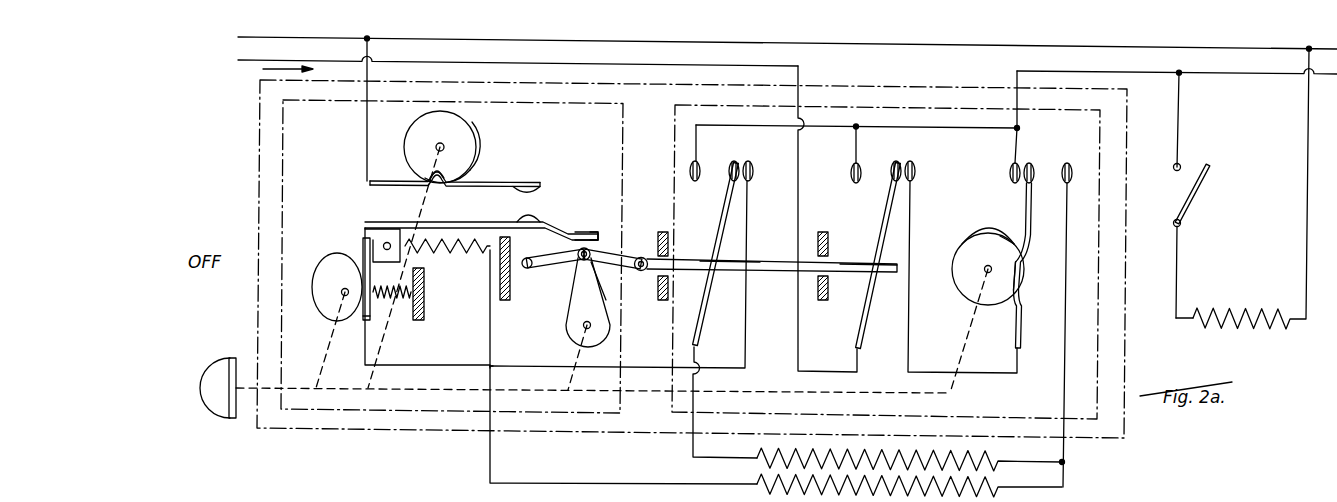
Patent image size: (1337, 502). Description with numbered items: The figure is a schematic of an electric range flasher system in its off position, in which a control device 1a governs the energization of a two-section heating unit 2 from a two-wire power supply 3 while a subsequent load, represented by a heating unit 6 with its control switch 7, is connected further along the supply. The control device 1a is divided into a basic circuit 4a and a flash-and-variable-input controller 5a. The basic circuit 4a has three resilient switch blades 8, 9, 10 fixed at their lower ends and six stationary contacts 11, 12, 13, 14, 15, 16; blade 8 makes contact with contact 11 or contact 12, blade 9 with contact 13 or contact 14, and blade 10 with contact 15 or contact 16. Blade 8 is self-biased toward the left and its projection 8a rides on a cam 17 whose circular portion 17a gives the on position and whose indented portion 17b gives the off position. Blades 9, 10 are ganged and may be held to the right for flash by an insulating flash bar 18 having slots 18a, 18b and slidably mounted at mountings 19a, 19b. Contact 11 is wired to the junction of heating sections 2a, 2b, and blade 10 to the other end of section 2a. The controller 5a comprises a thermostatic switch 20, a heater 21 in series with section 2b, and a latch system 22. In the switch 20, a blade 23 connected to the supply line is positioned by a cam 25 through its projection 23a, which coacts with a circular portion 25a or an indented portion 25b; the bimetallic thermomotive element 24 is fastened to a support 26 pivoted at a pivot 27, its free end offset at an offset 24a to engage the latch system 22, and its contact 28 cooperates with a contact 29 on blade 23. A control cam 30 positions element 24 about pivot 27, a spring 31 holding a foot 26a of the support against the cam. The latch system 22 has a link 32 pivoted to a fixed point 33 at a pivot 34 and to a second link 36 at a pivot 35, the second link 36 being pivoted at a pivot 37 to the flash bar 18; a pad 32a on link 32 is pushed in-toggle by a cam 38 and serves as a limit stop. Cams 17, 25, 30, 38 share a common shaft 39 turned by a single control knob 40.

The control device 1a is at (618, 432).
The heating unit 2 is at (926, 470).
The heating unit section 2a is at (1000, 458).
The heating unit section 2b is at (1000, 485).
The electrical power supply 3 is at (228, 14).
The basic circuit 4a is at (1012, 419).
The flash-and-variable-input controller 5a is at (445, 412).
The heating unit 6 is at (1233, 313).
The control switch 7 is at (1200, 197).
The switch blade 8 is at (1032, 210).
The projection 8a is at (1019, 264).
The switch blade 9 is at (878, 262).
The switch blade 10 is at (713, 255).
The stationary contact 11 is at (1070, 163).
The stationary contact 12 is at (1012, 165).
The stationary contact 13 is at (910, 163).
The stationary contact 14 is at (853, 165).
The stationary contact 15 is at (750, 162).
The stationary contact 16 is at (699, 162).
The cam 17 is at (965, 285).
The circular portion 17a is at (966, 250).
The indented portion 17b is at (1007, 247).
The flash bar 18 is at (767, 262).
The slot 18a is at (871, 277).
The slot 18b is at (711, 277).
The slidable mounting 19a is at (668, 240).
The slidable mounting 19b is at (828, 235).
The thermostatic switch 20 is at (462, 216).
The heater 21 is at (445, 253).
The latch system 22 is at (547, 385).
The switch blade 23 is at (383, 181).
The projection 23a is at (452, 178).
The bi-metallic thermomotive element 24 is at (380, 212).
The offset 24a is at (580, 232).
The cam 25 is at (414, 122).
The circular portion 25a is at (477, 147).
The indented portion 25b is at (450, 176).
The support 26 is at (364, 244).
The foot 26a is at (366, 320).
The pivot 27 is at (389, 251).
The contact 28 is at (522, 214).
The contact 29 is at (541, 188).
The control cam 30 is at (322, 259).
The spring 31 is at (417, 321).
The link 32 is at (575, 280).
The pad 32a is at (606, 280).
The fixed point 33 is at (505, 301).
The pivot 34 is at (528, 268).
The pivot 35 is at (595, 232).
The second link 36 is at (640, 257).
The pivot 37 is at (645, 250).
The cam 38 is at (578, 333).
The common shaft 39 is at (480, 390).
The control knob 40 is at (216, 358).